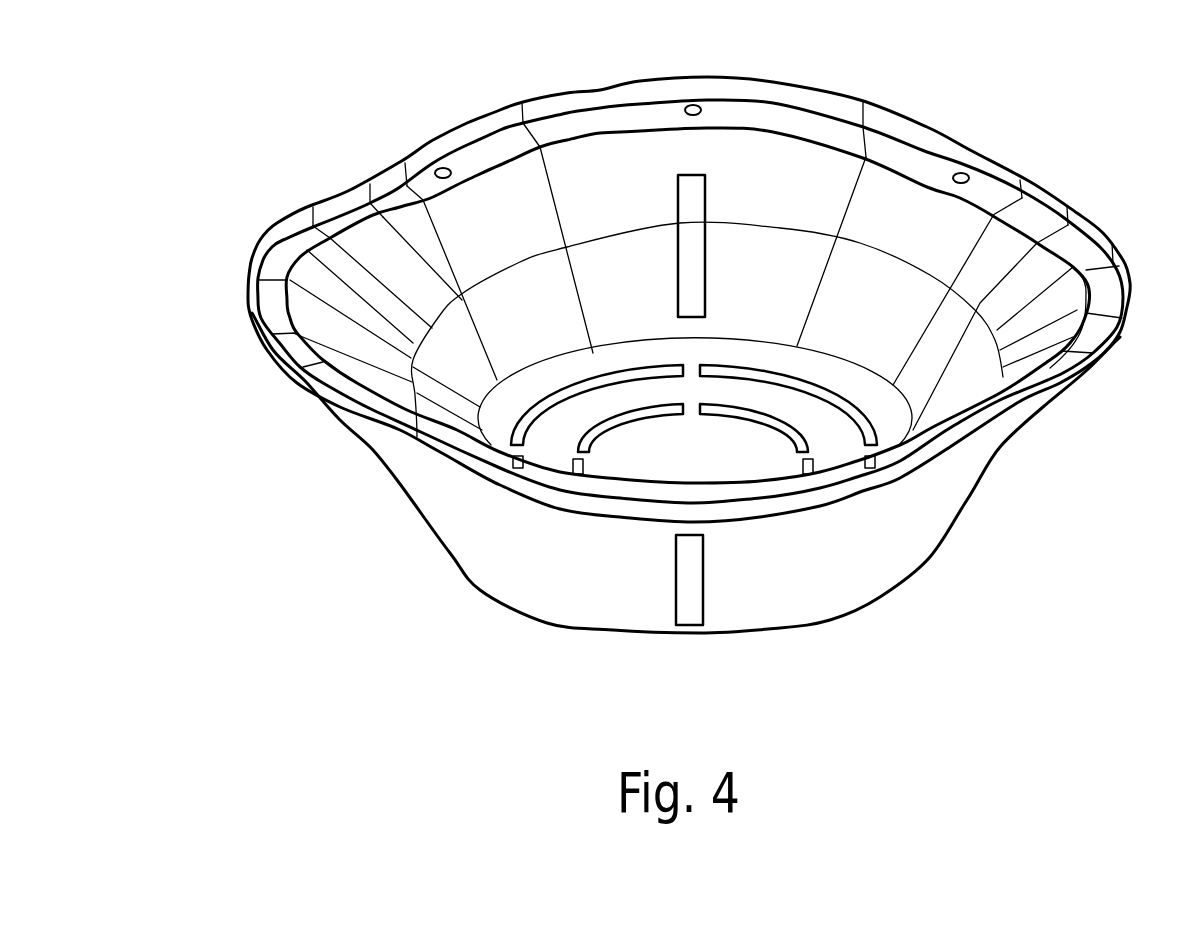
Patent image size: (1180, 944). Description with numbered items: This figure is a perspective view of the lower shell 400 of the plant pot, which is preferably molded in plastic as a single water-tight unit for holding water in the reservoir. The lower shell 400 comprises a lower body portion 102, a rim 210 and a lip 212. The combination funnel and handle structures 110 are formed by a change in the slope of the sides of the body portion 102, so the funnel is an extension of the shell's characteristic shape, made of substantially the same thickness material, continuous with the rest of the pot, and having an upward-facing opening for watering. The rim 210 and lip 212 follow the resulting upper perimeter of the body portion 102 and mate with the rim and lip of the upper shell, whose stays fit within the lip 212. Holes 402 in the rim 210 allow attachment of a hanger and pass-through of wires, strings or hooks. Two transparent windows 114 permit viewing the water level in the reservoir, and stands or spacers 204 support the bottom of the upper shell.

The lower body portion 102 is at (930, 563).
The combination funnel and handle structures 110 is at (1050, 403).
The transparent windows 114 is at (685, 587).
The spacers 204 is at (515, 425).
The rim 210 is at (788, 123).
The lip 212 is at (890, 112).
The lower shell 400 is at (400, 646).
The holes 402 is at (970, 173).